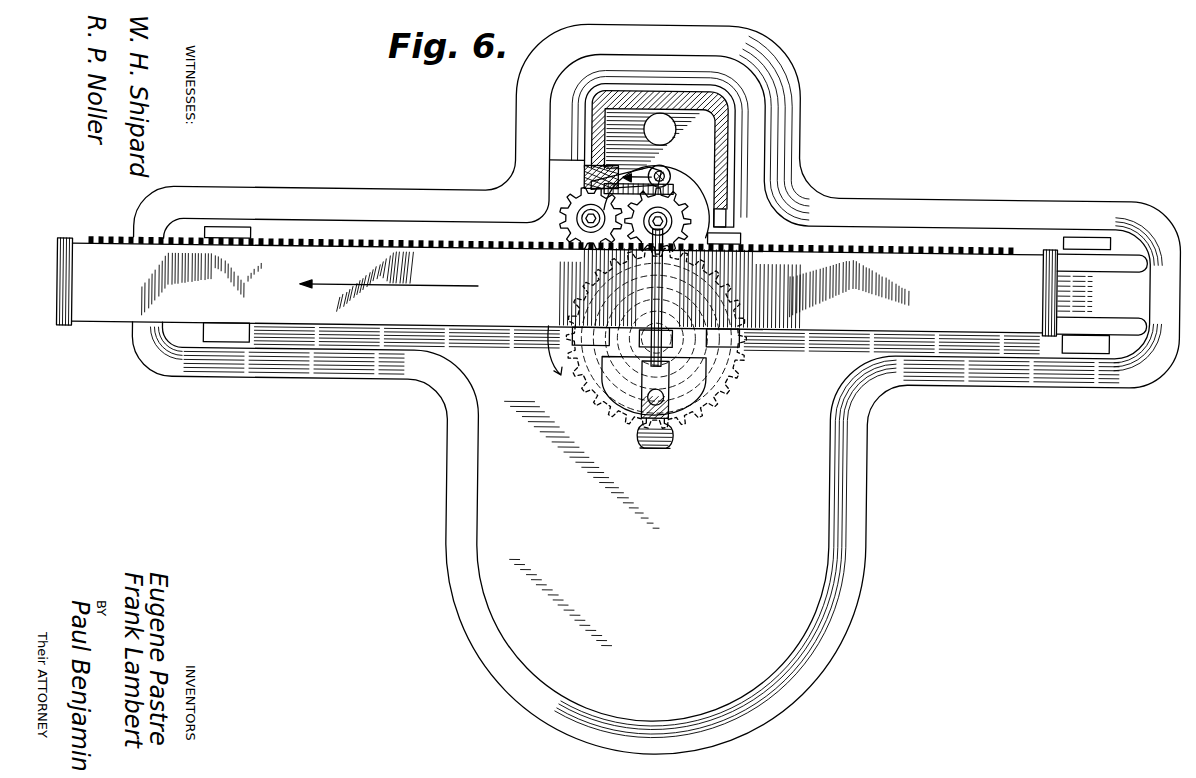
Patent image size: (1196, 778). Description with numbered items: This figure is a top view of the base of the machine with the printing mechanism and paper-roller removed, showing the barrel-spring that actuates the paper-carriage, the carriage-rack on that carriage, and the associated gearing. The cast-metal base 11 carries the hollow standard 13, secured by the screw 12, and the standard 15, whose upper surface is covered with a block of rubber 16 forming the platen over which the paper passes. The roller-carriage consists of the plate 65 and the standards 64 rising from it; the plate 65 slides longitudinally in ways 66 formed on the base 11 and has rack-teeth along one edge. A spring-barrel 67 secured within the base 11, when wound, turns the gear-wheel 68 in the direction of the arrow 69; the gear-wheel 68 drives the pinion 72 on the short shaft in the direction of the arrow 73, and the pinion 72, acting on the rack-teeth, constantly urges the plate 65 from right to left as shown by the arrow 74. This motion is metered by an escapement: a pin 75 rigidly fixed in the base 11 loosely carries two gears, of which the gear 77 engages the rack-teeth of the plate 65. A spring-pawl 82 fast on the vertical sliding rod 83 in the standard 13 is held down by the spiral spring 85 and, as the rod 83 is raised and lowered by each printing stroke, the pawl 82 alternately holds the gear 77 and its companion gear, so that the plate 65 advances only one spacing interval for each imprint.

The base 11 is at (655, 390).
The screw 12 is at (670, 138).
The hollow standard 13 is at (733, 128).
The standard 15 is at (686, 380).
The block of rubber 16 is at (646, 420).
The standards 64 is at (1042, 292).
The plate 65 is at (553, 268).
The ways 66 is at (1101, 294).
The spring-barrel 67 is at (607, 372).
The gear-wheel 68 is at (735, 375).
The arrow 69 is at (571, 285).
The pinion 72 is at (690, 251).
The arrow 73 is at (727, 222).
The arrow 74 is at (389, 296).
The pin 75 is at (566, 208).
The gear 77 is at (576, 225).
The spring-pawl 82 is at (587, 164).
The vertical sliding rod 83 is at (669, 175).
The spiral spring 85 is at (638, 170).